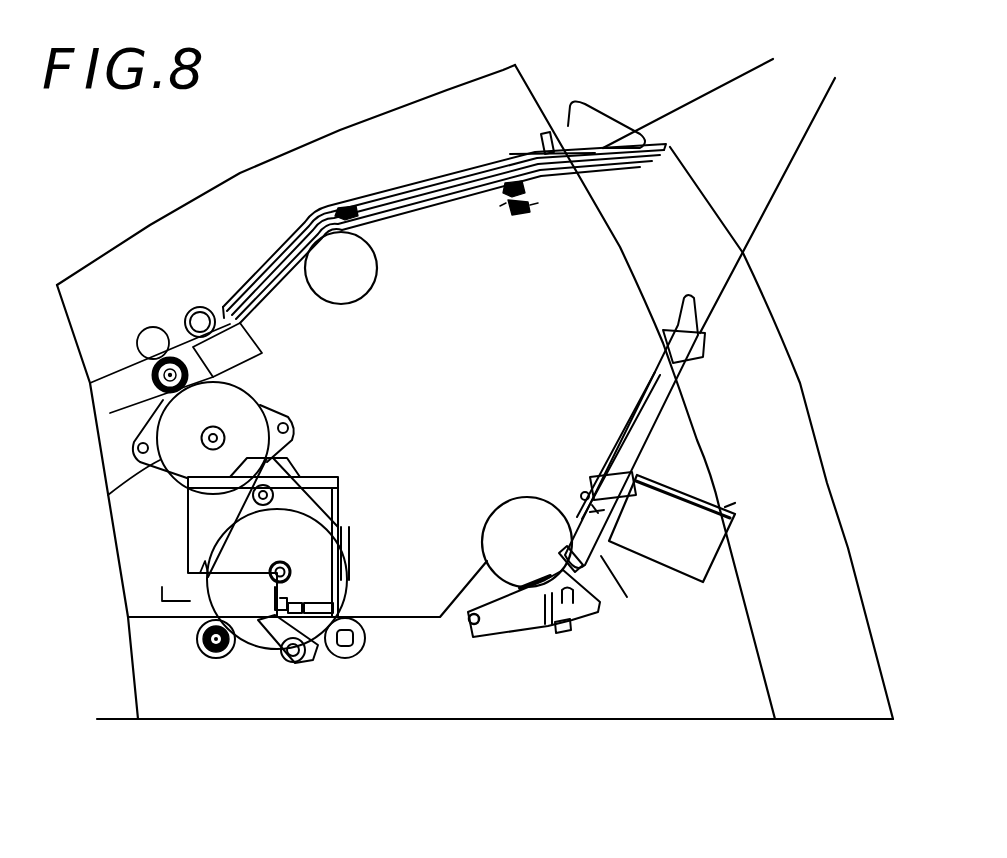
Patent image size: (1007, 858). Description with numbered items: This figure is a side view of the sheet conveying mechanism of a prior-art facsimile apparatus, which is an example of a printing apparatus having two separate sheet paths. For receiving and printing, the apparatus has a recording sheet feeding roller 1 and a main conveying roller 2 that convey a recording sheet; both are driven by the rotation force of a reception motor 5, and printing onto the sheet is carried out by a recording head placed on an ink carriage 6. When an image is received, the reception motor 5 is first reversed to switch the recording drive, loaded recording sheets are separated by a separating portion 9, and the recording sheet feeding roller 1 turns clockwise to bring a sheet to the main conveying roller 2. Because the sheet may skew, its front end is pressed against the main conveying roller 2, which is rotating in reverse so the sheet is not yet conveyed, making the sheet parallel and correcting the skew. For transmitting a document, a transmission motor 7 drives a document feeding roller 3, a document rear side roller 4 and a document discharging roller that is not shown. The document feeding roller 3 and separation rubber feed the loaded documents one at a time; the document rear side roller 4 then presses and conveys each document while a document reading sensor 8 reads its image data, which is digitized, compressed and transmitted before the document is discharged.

The recording sheet feeding roller 1 is at (487, 561).
The main conveying roller 2 is at (348, 640).
The document feeding roller 3 is at (368, 247).
The document rear side roller 4 is at (205, 307).
The reception motor 5 is at (277, 640).
The ink carriage 6 is at (200, 525).
The transmission motor 7 is at (160, 463).
The document reading sensor 8 is at (157, 385).
The separating portion 9 is at (540, 638).